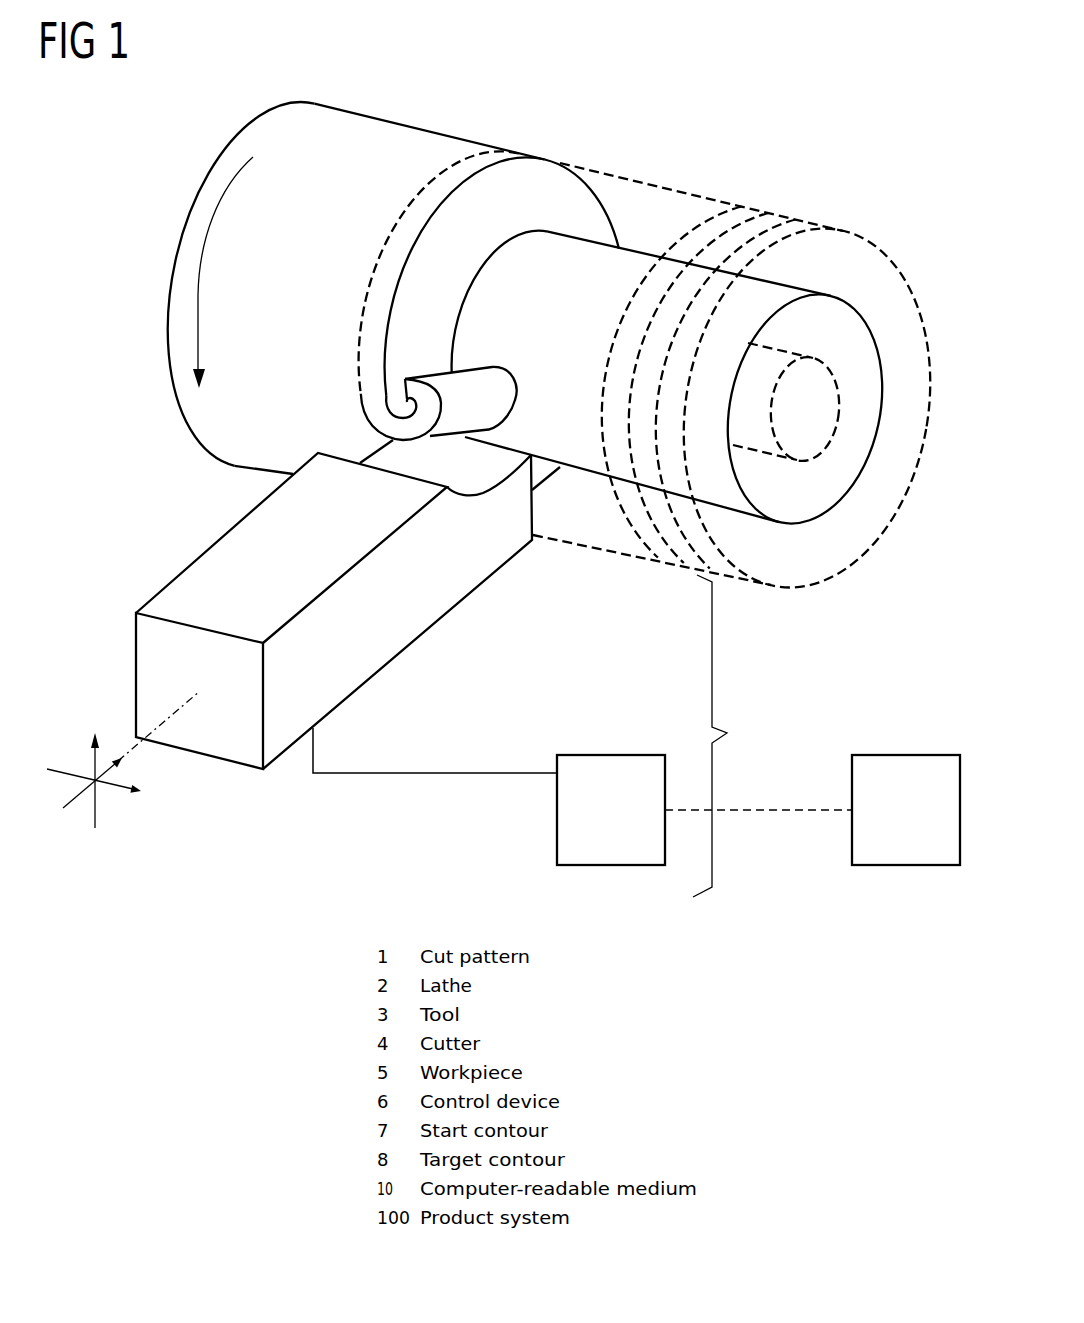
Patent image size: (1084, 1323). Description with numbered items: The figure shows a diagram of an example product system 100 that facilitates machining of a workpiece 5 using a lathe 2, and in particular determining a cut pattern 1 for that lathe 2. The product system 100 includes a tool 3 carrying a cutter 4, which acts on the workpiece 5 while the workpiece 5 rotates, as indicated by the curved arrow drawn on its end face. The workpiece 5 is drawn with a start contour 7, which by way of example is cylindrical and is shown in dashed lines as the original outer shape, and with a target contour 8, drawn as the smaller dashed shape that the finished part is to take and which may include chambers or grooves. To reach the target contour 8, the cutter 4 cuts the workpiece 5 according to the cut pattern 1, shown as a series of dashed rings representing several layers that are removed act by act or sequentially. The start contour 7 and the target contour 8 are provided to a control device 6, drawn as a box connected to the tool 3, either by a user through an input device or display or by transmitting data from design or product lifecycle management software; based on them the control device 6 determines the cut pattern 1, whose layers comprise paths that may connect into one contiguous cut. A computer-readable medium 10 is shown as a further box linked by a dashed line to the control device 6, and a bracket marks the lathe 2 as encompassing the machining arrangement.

The cut pattern 1 is at (452, 157).
The lathe 2 is at (718, 736).
The tool 3 is at (580, 558).
The cutter 4 is at (463, 477).
The workpiece 5 is at (368, 135).
The control device 6 is at (617, 828).
The start contour 7 is at (617, 175).
The target contour 8 is at (773, 457).
The computer-readable medium 10 is at (920, 828).
The product system 100 is at (672, 110).